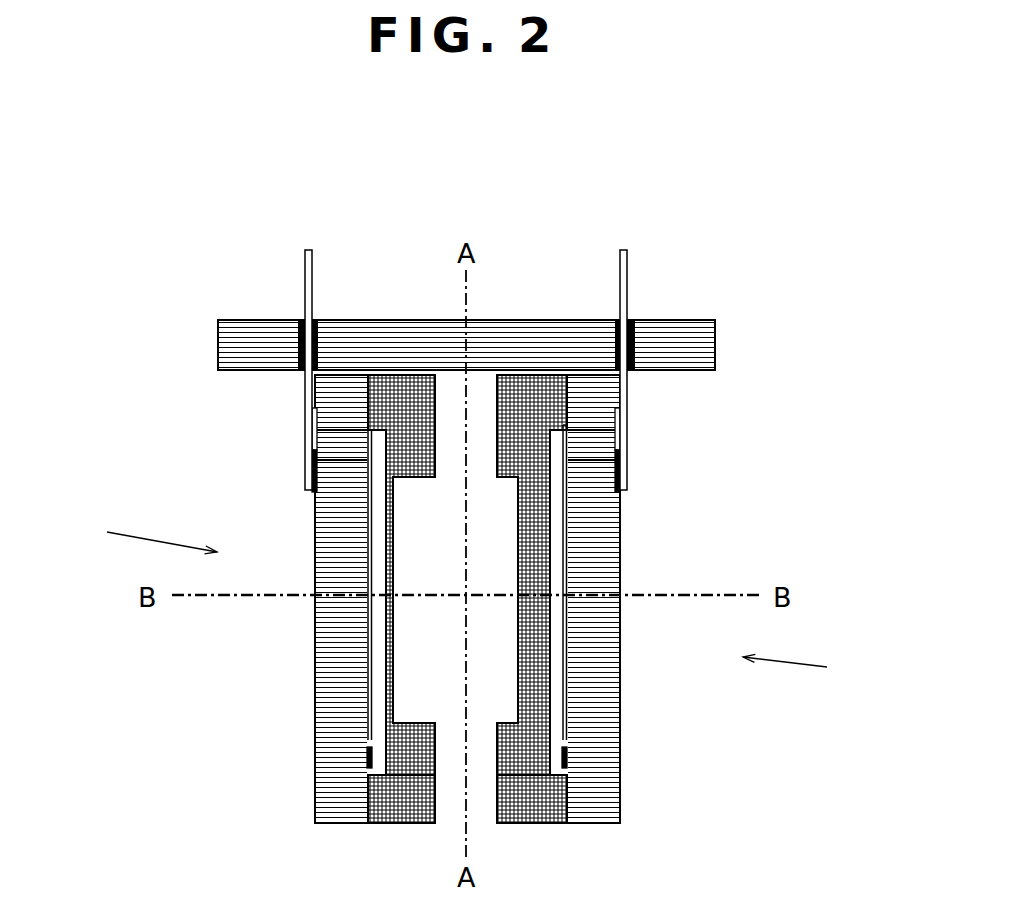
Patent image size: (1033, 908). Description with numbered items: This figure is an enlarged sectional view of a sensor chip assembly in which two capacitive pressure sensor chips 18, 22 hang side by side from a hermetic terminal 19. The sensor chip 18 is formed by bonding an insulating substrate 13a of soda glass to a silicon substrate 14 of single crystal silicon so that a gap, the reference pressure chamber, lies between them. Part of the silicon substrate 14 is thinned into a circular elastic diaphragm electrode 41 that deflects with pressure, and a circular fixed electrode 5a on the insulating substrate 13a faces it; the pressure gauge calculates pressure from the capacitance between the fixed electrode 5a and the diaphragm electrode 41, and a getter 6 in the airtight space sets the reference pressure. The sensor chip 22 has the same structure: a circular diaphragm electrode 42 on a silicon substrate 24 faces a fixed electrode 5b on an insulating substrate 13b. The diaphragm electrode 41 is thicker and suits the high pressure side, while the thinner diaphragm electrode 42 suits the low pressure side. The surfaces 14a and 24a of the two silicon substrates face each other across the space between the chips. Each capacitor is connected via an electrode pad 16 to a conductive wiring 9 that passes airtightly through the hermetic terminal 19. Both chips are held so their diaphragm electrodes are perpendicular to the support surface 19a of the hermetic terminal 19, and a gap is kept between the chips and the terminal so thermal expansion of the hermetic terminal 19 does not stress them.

The conductive wiring 9 is at (308, 270).
The hermetic terminal 19 is at (678, 337).
The support surface 19a is at (675, 370).
The electrode pad 16 is at (330, 433).
The diaphragm electrode 42 is at (390, 548).
The diaphragm electrode 41 is at (535, 540).
The fixed electrode 5a is at (565, 580).
The fixed electrode 5b is at (363, 617).
The getter 6 is at (368, 752).
The insulating substrate 13a is at (613, 702).
The insulating substrate 13b is at (328, 752).
The silicon substrate 14 is at (527, 813).
The silicon substrate 24 is at (405, 813).
The first facing surface 14a is at (513, 637).
The second facing surface 24a is at (398, 693).
The sensor chip 22 is at (100, 544).
The sensor chip 18 is at (870, 687).